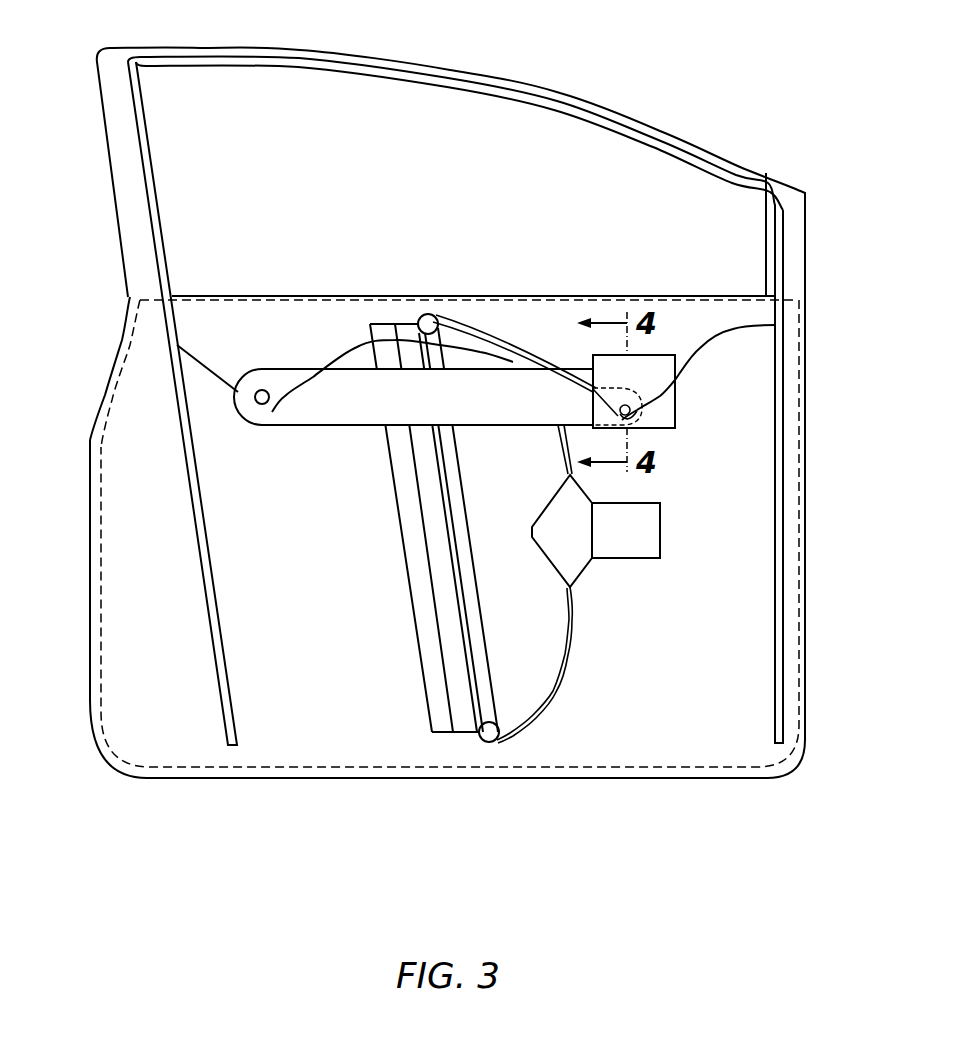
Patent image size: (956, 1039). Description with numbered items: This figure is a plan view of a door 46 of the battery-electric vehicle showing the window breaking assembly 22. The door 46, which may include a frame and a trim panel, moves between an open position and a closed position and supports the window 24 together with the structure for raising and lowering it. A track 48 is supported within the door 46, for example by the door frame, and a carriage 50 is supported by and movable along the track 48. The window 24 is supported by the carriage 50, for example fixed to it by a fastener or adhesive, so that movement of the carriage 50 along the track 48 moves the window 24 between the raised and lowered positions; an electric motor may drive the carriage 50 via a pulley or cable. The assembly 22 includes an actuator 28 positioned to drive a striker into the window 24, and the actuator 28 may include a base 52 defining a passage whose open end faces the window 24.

The window breaking assembly 22 is at (700, 401).
The window 24 is at (582, 200).
The actuator 28 is at (667, 417).
The door 46 is at (126, 168).
The track 48 is at (447, 612).
The carriage 50 is at (333, 405).
The base 52 is at (680, 512).